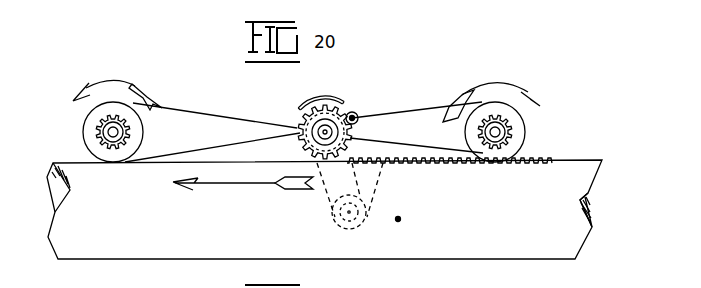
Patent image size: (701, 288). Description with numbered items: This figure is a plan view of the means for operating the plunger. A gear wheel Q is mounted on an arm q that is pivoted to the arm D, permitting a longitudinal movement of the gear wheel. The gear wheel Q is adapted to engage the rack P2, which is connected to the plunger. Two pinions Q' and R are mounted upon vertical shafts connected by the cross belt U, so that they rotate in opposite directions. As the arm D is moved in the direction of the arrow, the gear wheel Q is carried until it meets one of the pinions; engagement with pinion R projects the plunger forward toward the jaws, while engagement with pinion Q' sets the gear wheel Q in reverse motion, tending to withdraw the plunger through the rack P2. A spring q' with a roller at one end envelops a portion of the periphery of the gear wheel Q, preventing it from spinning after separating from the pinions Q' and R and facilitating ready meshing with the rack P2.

The pinion Q' is at (110, 121).
The pinion R is at (498, 115).
The cross belt U is at (408, 116).
The spring q' is at (325, 118).
The gear wheel Q is at (354, 105).
The arm q is at (346, 196).
The rack P2 is at (432, 158).
The arm D is at (448, 248).